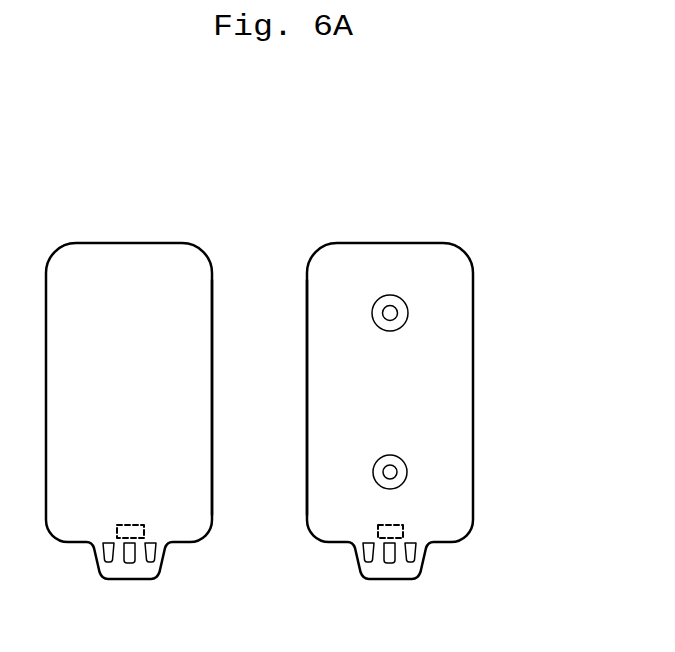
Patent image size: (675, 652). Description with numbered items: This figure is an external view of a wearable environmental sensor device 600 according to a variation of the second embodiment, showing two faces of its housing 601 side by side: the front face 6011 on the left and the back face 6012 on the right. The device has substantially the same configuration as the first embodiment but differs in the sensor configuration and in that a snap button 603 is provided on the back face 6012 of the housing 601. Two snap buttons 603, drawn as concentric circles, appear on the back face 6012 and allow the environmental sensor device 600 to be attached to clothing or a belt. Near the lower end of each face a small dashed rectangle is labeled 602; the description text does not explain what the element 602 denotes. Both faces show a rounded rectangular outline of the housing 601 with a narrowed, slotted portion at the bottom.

The environmental sensor device 600 is at (239, 155).
The front face 6011 is at (150, 231).
The back face 6012 is at (368, 232).
The housing 601 is at (324, 341).
The connector 602 is at (378, 530).
The snap button 603 is at (408, 314).